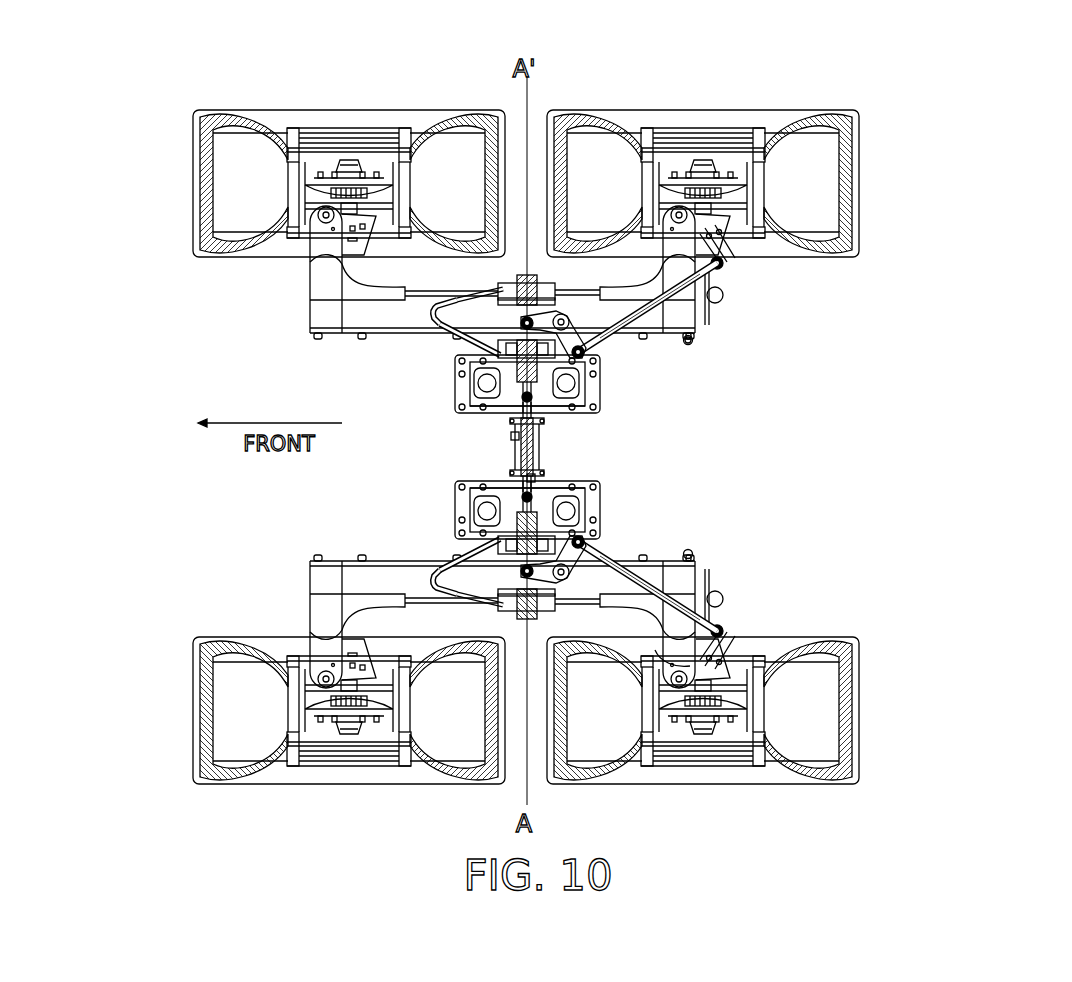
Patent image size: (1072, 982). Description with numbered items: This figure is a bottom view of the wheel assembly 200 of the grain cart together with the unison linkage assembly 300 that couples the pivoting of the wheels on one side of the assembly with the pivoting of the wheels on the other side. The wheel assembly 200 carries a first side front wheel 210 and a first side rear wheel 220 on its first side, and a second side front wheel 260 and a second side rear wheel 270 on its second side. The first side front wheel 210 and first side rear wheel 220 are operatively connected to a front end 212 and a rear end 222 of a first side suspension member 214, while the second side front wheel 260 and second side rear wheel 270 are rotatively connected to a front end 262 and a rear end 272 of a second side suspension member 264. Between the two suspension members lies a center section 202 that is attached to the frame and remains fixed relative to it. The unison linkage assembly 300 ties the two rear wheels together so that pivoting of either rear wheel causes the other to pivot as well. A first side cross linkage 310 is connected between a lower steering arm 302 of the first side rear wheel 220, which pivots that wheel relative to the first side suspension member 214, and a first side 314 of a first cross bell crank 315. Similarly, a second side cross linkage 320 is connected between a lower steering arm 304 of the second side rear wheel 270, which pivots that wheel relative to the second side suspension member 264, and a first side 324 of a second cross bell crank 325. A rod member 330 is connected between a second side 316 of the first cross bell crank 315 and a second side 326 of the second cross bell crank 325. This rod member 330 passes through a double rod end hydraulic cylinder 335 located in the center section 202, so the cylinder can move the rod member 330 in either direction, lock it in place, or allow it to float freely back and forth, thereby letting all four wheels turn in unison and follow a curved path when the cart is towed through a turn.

The wheel assembly 200 is at (948, 344).
The center section 202 is at (455, 506).
The first side front wheel 210 is at (250, 787).
The front end of first side suspension member 212 is at (325, 648).
The first side suspension member 214 is at (605, 590).
The first side rear wheel 220 is at (830, 788).
The rear end of first side suspension member 222 is at (658, 662).
The second side front wheel 260 is at (337, 110).
The front end of second side suspension member 262 is at (317, 260).
The second side suspension member 264 is at (470, 317).
The second side rear wheel 270 is at (780, 110).
The rear end of second side suspension member 272 is at (722, 215).
The unison linkage assembly 300 is at (603, 433).
The lower steering arm of first side rear wheel 302 is at (727, 655).
The lower steering arm of second side rear wheel 304 is at (728, 262).
The first side cross linkage 310 is at (700, 593).
The first side of first cross bell crank 314 is at (590, 535).
The first cross bell crank 315 is at (582, 548).
The second side of first cross bell crank 316 is at (557, 522).
The second side cross linkage 320 is at (710, 314).
The first side of second cross bell crank 324 is at (590, 362).
The second cross bell crank 325 is at (582, 356).
The second side of second cross bell crank 326 is at (694, 340).
The rod member 330 is at (538, 482).
The double rod end hydraulic cylinder 335 is at (521, 437).